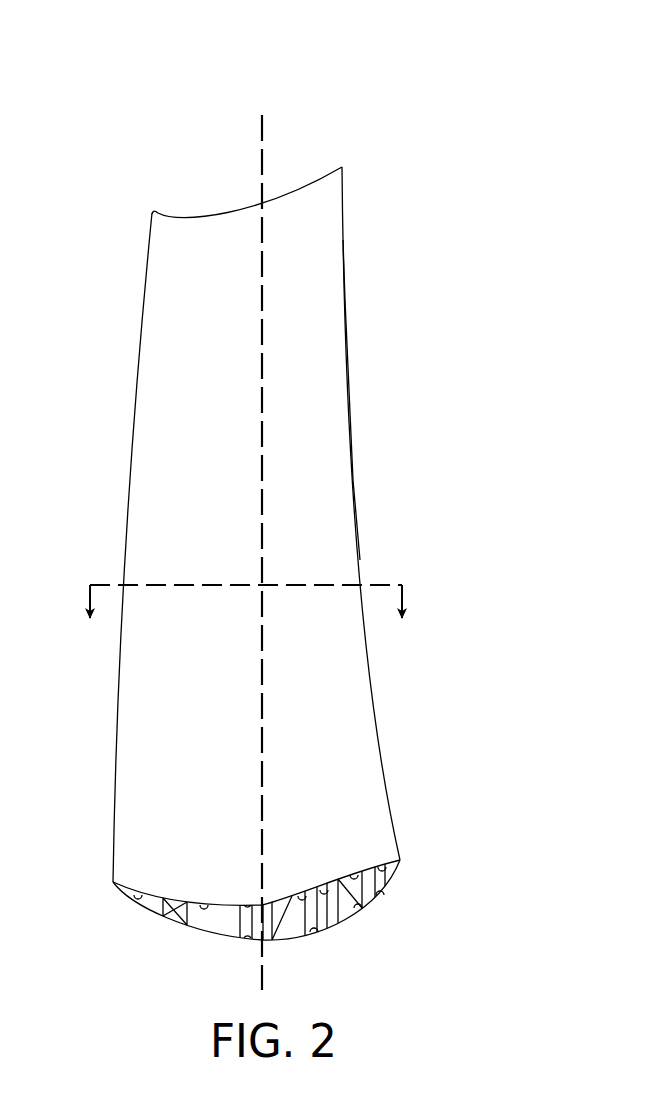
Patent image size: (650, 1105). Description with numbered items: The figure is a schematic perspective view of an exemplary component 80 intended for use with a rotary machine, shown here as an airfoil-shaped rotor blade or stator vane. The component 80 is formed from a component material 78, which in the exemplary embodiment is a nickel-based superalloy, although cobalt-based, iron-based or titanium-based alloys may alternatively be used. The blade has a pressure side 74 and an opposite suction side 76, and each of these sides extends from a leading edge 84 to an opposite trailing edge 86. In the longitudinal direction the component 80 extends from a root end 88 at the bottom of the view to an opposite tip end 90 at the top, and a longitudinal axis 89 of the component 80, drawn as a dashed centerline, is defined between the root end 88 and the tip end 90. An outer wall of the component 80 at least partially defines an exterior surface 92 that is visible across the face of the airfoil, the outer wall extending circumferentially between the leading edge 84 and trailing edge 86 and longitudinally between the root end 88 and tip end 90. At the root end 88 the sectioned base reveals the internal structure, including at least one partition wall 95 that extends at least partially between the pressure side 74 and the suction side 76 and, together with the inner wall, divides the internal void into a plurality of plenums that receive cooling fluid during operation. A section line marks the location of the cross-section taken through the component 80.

The component 80 is at (283, 501).
The tip end 90 is at (303, 176).
The longitudinal axis 89 is at (262, 153).
The suction side 76 is at (330, 307).
The pressure side 74 is at (330, 388).
The component material 78 is at (335, 463).
The leading edge 84 is at (378, 725).
The trailing edge 86 is at (117, 740).
The root end 88 is at (312, 901).
The exterior surface 92 is at (345, 823).
The partition wall 95 is at (160, 920).